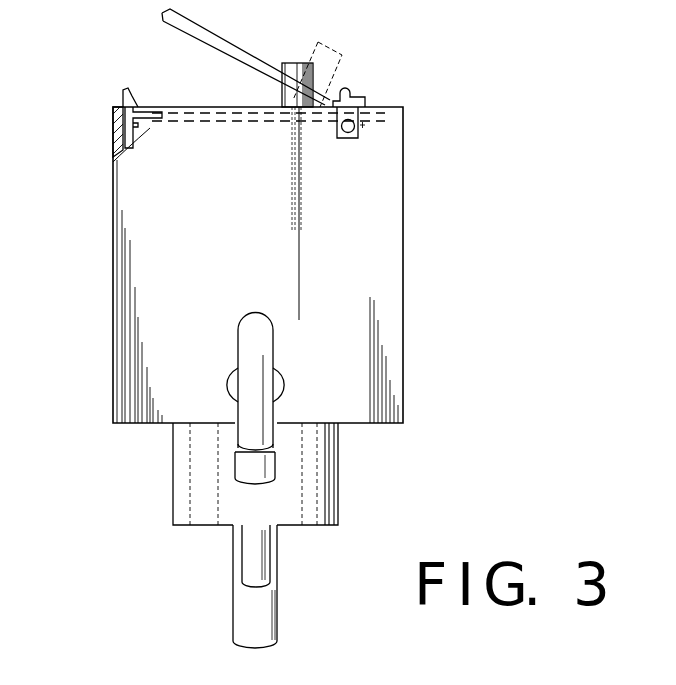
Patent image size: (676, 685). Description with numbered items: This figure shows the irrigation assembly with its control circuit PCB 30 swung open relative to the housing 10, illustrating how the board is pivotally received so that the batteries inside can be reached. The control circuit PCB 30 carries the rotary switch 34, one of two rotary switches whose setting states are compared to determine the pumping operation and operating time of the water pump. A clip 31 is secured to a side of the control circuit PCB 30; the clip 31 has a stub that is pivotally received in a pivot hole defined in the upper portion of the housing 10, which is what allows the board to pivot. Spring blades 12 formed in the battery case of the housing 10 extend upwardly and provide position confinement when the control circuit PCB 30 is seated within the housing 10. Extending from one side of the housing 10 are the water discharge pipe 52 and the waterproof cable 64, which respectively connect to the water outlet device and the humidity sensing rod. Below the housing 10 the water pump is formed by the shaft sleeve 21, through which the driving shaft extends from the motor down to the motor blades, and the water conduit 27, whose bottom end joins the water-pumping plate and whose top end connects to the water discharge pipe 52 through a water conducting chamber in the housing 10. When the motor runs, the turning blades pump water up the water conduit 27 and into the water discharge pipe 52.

The housing 10 is at (385, 326).
The spring blades 12 is at (128, 108).
The control circuit PCB 30 is at (155, 118).
The rotary switch 34 is at (313, 82).
The clip 31 is at (358, 132).
The waterproof cable 64 is at (262, 336).
The water discharge pipe 52 is at (245, 461).
The water conduit 27 is at (249, 555).
The shaft sleeve 21 is at (265, 613).